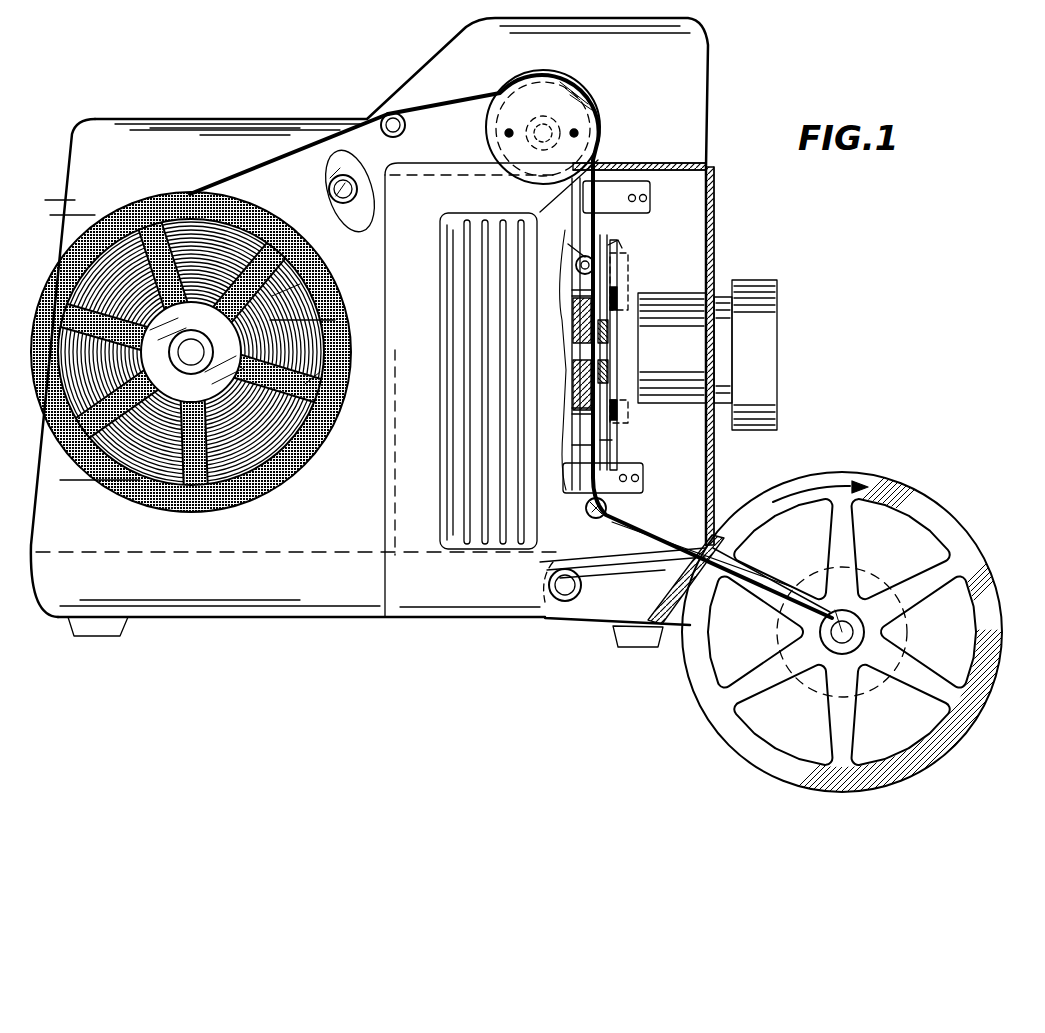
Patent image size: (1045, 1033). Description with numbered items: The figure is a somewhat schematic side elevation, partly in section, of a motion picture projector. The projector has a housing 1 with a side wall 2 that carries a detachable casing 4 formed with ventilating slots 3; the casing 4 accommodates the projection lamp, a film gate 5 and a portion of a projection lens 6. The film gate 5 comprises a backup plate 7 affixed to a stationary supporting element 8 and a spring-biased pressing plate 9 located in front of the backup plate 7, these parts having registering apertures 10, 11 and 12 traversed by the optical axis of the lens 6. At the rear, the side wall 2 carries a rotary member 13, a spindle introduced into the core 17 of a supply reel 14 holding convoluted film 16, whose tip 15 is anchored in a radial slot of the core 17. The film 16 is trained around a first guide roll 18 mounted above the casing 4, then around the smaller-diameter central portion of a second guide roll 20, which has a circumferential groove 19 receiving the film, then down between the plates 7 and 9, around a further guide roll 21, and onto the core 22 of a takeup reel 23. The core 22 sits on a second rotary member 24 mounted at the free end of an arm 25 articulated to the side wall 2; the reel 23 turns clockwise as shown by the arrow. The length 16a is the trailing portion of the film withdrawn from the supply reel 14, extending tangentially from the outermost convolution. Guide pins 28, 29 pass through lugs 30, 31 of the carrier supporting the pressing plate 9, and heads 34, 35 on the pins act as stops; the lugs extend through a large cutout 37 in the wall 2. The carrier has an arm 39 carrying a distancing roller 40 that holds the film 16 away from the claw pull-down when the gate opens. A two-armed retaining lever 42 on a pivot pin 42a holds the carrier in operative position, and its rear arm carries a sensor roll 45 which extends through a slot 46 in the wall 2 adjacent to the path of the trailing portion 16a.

The housing 1 is at (722, 270).
The side wall 2 is at (703, 95).
The ventilating slots 3 is at (497, 552).
The detachable casing 4 is at (383, 525).
The film gate 5 is at (566, 226).
The projection lens 6 is at (766, 345).
The backup plate 7 is at (583, 445).
The stationary supporting element 8 is at (573, 480).
The pressing plate 9 is at (602, 252).
The aperture 10 is at (573, 374).
The aperture 11 is at (575, 342).
The aperture 12 is at (604, 350).
The rotary member 13 is at (190, 355).
The supply reel 14 is at (265, 492).
The tip of the film 15 is at (191, 352).
The film 16 is at (427, 103).
The trailing length of the film 16a is at (262, 163).
The core of the supply reel 17 is at (296, 334).
The first guide roll 18 is at (383, 119).
The circumferential groove 19 is at (500, 128).
The second guide roll 20 is at (590, 105).
The further guide roll 21 is at (587, 515).
The core of the takeup reel 22 is at (868, 585).
The takeup reel 23 is at (868, 490).
The second rotary member 24 is at (866, 632).
The arm 25 is at (733, 630).
The guide pin 28 is at (578, 412).
The guide pin 29 is at (580, 300).
The lug 30 is at (612, 440).
The lug 31 is at (620, 290).
The head 34 is at (615, 412).
The head 35 is at (626, 285).
The cutout 37 is at (613, 221).
The arm 39 is at (572, 256).
The distancing roller 40 is at (576, 267).
The retaining lever 42 is at (366, 205).
The pivot pin 42a is at (557, 84).
The roll 45 is at (328, 188).
The slot 46 is at (363, 232).